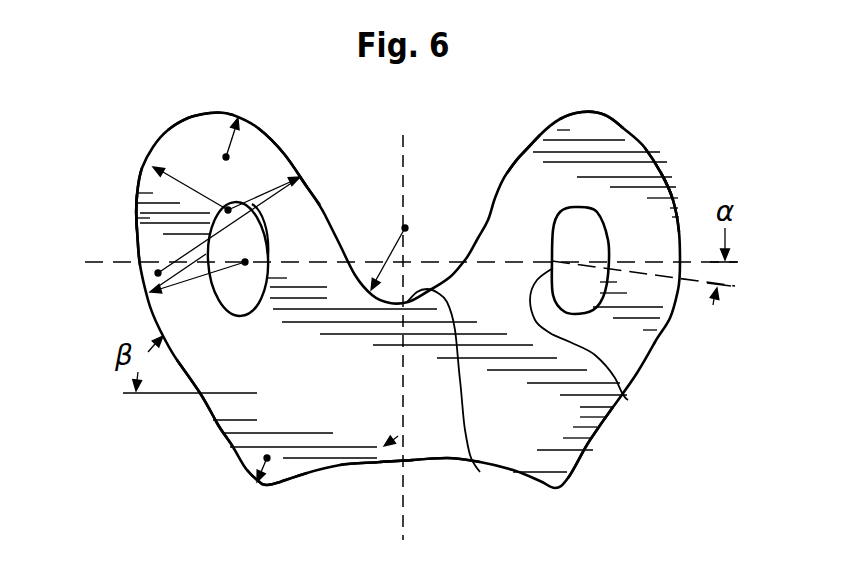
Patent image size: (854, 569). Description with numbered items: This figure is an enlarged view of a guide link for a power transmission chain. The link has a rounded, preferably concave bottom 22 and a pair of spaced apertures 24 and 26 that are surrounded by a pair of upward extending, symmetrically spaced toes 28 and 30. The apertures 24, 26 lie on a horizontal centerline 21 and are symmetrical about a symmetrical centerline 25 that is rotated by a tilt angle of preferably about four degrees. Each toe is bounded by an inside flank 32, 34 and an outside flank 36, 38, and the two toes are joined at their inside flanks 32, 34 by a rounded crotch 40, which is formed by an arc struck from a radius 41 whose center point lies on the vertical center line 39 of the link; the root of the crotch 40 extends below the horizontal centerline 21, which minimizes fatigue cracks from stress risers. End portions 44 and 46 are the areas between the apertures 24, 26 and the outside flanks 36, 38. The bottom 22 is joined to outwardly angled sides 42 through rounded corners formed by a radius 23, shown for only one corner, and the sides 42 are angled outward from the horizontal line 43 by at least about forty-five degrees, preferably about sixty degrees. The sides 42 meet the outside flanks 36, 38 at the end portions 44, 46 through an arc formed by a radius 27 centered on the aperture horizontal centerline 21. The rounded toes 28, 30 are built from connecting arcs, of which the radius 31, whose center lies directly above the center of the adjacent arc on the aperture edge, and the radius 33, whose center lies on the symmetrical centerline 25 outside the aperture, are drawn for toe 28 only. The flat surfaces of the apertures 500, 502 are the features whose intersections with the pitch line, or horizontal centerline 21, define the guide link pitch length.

The horizontal centerline 21 is at (357, 261).
The rounded bottom 22 is at (433, 462).
The radius 23 is at (288, 472).
The aperture 24 is at (149, 291).
The symmetrical centerline 25 is at (690, 286).
The aperture 26 is at (600, 298).
The radius 27 is at (178, 175).
The toe 28 is at (200, 130).
The toe 30 is at (618, 142).
The radius 31 is at (226, 157).
The inside flank 32 is at (313, 188).
The radius 33 is at (283, 185).
The inside flank 34 is at (524, 152).
The outside flank 36 is at (137, 192).
The outside flank 38 is at (665, 170).
The vertical center line 39 is at (375, 462).
The crotch 40 is at (480, 472).
The radius 41 is at (391, 253).
The outwardly angled sides 42 is at (592, 447).
The horizontal line 43 is at (175, 393).
The end portion 44 is at (137, 220).
The end portion 46 is at (678, 195).
The flat surface of the aperture 500 is at (628, 400).
The flat surface of the aperture 502 is at (268, 258).